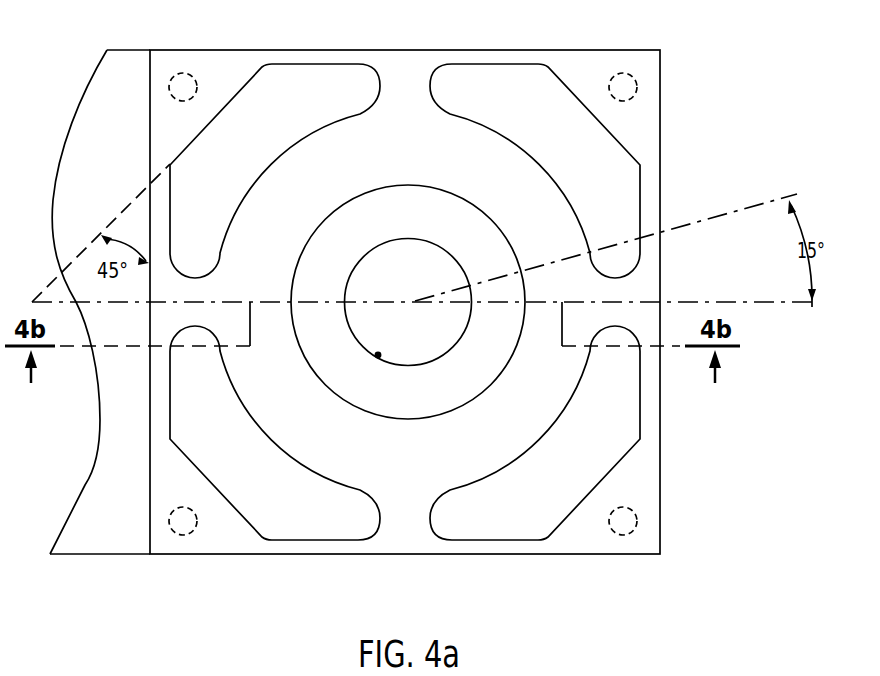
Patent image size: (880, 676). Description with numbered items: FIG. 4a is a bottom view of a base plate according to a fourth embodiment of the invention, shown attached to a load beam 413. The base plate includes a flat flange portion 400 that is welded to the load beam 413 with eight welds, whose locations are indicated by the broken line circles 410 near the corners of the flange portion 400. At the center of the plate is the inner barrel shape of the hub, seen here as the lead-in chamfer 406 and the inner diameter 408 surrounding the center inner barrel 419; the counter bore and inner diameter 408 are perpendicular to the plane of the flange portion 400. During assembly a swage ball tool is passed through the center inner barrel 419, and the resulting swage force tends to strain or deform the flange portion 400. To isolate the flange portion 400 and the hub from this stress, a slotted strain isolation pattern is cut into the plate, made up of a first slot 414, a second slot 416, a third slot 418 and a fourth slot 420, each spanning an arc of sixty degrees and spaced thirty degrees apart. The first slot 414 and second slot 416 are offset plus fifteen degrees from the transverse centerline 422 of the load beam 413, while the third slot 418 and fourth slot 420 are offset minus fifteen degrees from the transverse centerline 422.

The flat flange portion 400 is at (580, 65).
The lead-in chamfer 406 is at (504, 353).
The inner diameter 408 is at (378, 355).
The broken line circles 410 is at (638, 518).
The load beam 413 is at (128, 164).
The first slot 414 is at (315, 63).
The second slot 416 is at (485, 63).
The third slot 418 is at (637, 405).
The center inner barrel 419 is at (417, 284).
The fourth slot 420 is at (292, 542).
The transverse centerline 422 is at (783, 304).